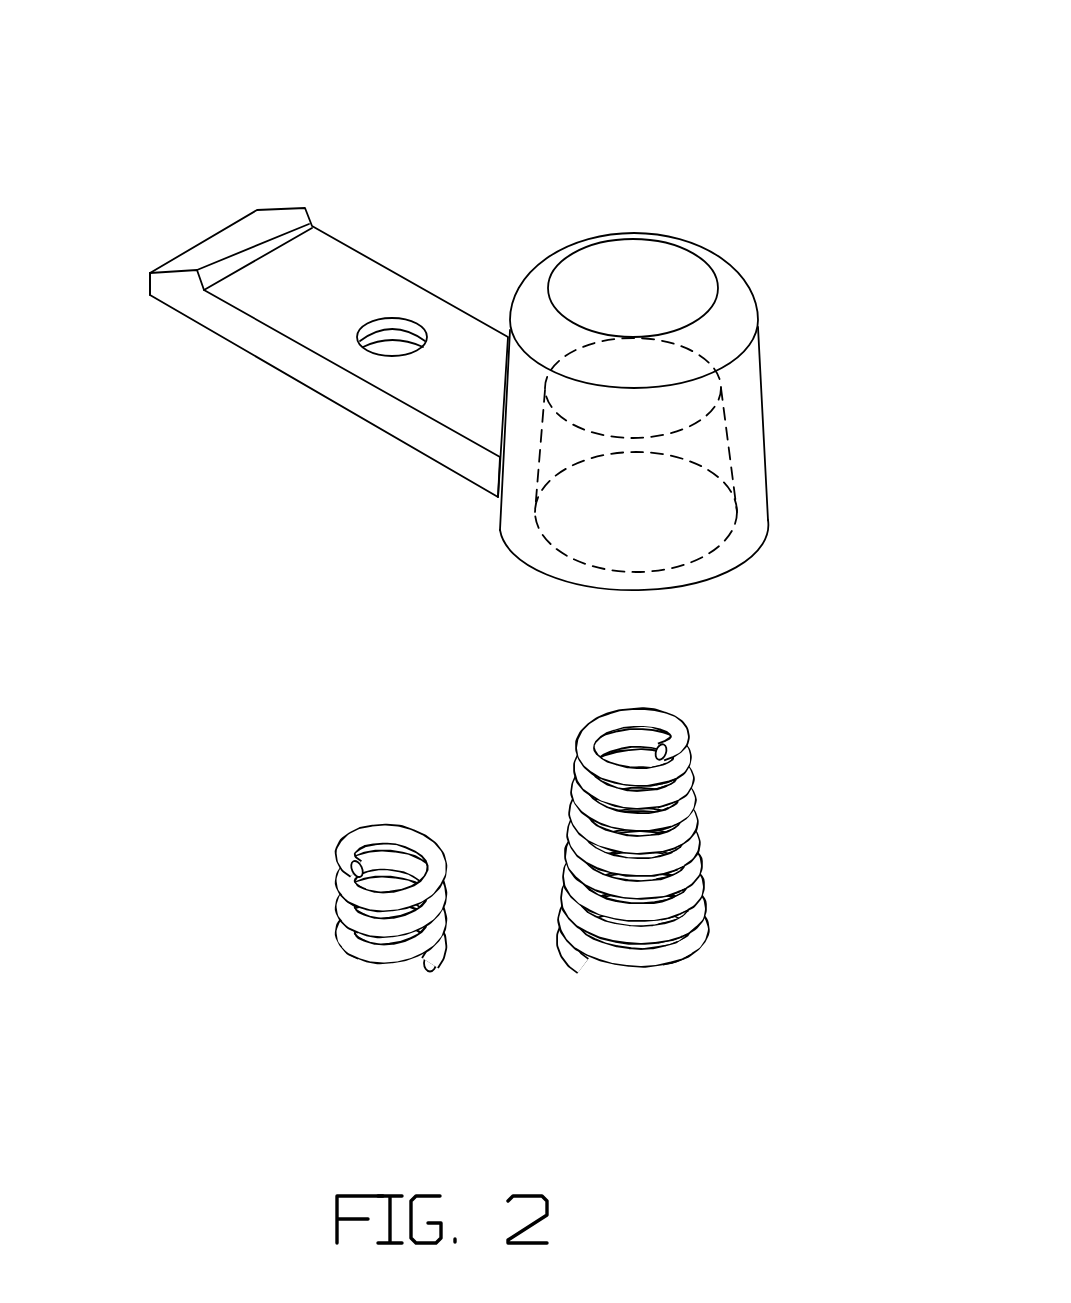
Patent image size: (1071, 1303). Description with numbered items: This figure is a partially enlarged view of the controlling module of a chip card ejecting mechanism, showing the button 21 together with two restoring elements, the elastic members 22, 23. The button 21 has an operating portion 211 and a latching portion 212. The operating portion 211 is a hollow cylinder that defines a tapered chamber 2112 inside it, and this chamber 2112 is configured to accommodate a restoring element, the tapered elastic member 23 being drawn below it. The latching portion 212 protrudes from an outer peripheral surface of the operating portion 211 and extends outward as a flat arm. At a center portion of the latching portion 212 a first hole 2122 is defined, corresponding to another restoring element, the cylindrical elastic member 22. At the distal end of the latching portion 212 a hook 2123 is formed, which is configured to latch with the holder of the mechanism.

The button 21 is at (461, 374).
The operating portion 211 is at (612, 441).
The tapered chamber 2112 is at (690, 493).
The latching portion 212 is at (293, 322).
The first hole 2122 is at (413, 135).
The hook 2123 is at (196, 278).
The elastic member 22 is at (485, 1018).
The elastic member 23 is at (793, 985).